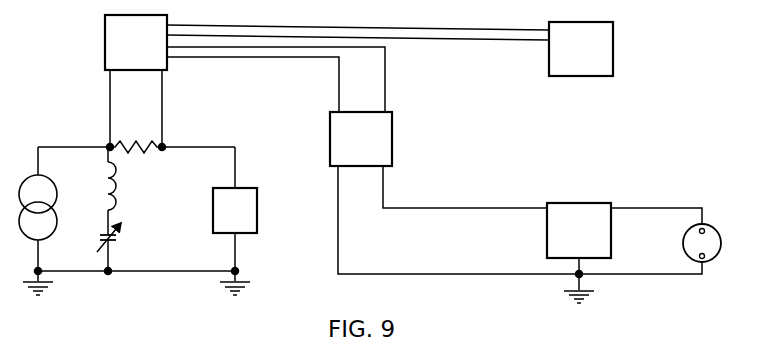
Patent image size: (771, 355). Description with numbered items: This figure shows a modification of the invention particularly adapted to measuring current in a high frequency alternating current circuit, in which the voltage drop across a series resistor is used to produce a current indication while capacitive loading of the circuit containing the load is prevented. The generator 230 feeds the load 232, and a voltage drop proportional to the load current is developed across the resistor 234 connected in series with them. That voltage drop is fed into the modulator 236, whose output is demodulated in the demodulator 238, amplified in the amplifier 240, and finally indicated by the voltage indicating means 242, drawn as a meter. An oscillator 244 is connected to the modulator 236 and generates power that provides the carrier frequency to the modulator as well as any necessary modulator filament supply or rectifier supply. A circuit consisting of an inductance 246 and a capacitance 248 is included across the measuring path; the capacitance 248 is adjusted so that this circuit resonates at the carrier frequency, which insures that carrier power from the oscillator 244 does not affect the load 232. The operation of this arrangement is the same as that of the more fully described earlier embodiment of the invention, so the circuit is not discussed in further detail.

The generator 230 is at (55, 237).
The load 232 is at (240, 233).
The resistor 234 is at (149, 152).
The modulator 236 is at (169, 72).
The demodulator 238 is at (393, 152).
The amplifier 240 is at (576, 203).
The voltage indicating means 242 is at (707, 227).
The oscillator 244 is at (614, 68).
The inductance 246 is at (117, 195).
The capacitance 248 is at (117, 244).